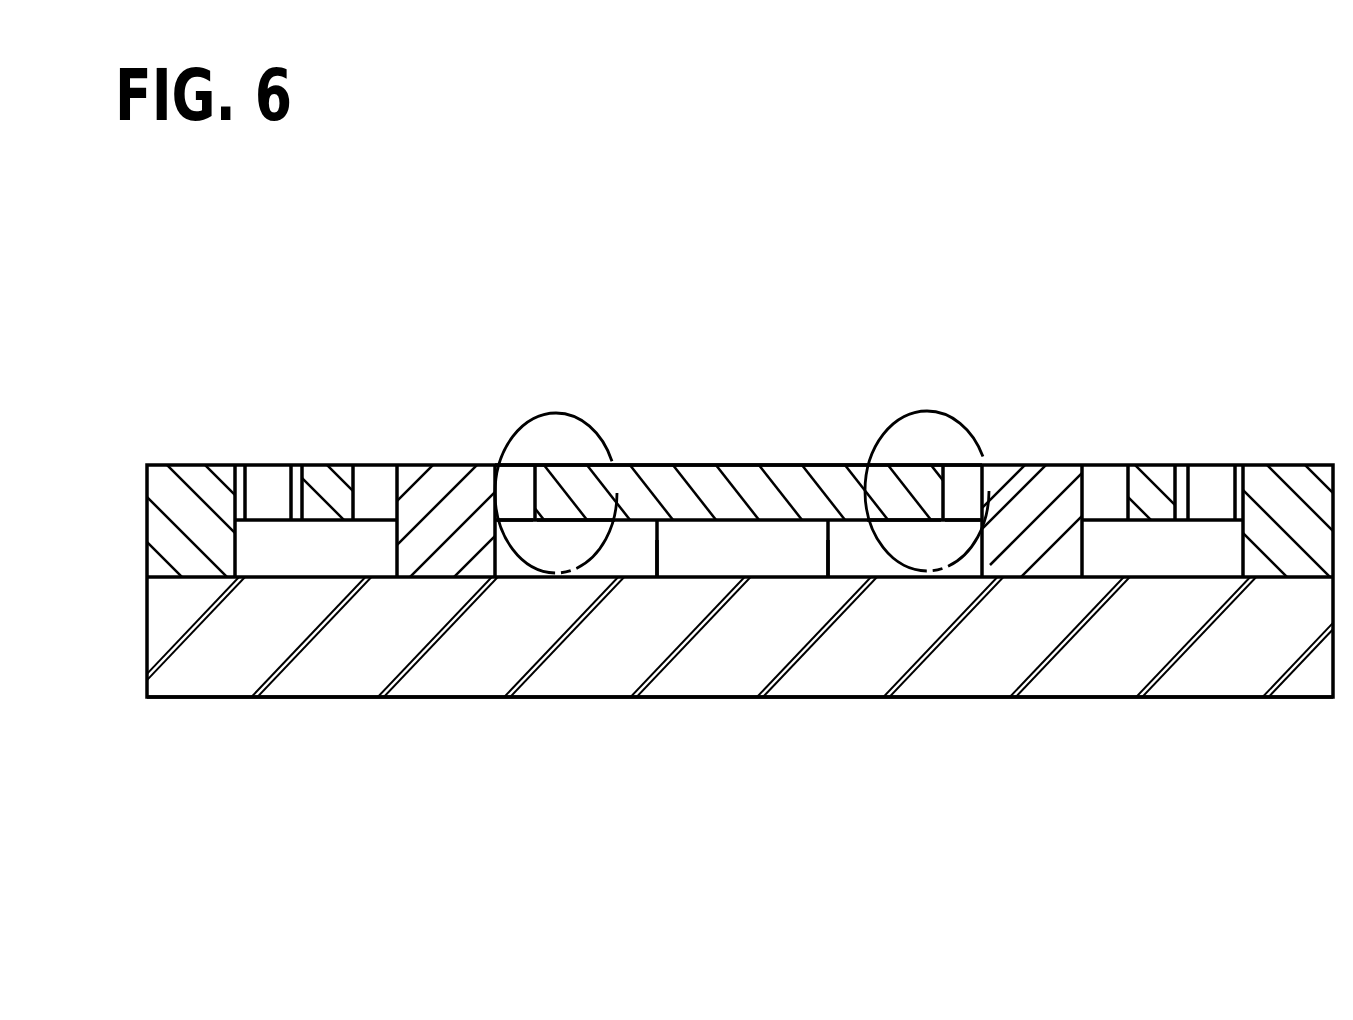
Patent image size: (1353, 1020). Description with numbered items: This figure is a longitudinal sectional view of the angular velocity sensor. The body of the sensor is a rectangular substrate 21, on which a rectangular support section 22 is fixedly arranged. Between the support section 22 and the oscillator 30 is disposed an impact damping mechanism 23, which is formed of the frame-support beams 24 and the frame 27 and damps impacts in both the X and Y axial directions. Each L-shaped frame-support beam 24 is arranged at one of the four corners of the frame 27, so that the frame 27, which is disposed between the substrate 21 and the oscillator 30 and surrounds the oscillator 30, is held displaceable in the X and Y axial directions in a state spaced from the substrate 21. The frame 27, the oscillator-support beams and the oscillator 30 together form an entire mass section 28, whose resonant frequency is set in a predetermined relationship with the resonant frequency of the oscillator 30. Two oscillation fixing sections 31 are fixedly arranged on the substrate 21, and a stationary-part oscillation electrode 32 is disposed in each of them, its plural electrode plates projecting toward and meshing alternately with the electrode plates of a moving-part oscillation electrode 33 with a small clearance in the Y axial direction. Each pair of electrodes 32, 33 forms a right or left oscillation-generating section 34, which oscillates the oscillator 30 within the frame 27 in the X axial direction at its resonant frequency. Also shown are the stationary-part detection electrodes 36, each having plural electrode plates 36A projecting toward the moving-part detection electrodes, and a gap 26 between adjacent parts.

The substrate 21 is at (223, 683).
The support section 22 is at (157, 490).
The impact damping mechanism 23 is at (345, 450).
The frame-support beam 24 is at (274, 483).
The gap 26 is at (240, 465).
The frame 27 is at (322, 482).
The entire mass section 28 is at (789, 450).
The oscillator 30 is at (735, 472).
The oscillation fixing section 31 is at (440, 475).
The stationary-part oscillation electrode 32 is at (794, 413).
The moving-part oscillation electrode 33 is at (745, 413).
The oscillation-generating section 34 is at (586, 405).
The stationary-part detection electrode 36 is at (740, 558).
The electrode plate 36A is at (668, 558).